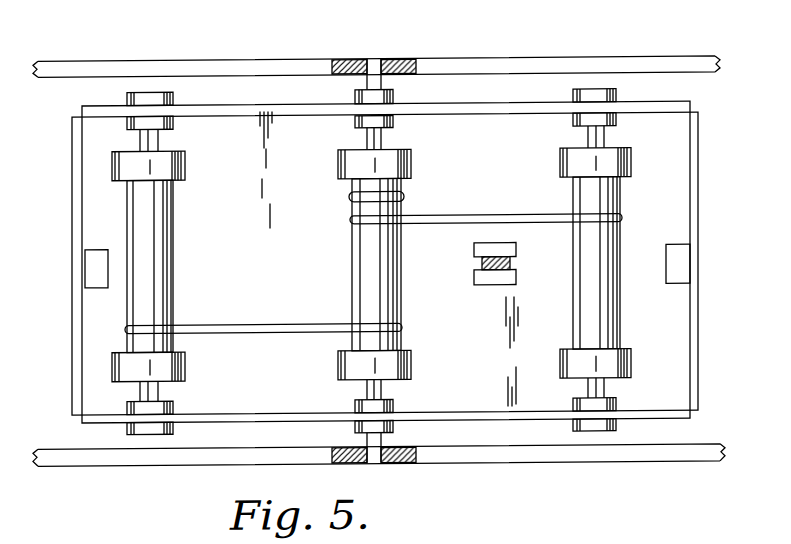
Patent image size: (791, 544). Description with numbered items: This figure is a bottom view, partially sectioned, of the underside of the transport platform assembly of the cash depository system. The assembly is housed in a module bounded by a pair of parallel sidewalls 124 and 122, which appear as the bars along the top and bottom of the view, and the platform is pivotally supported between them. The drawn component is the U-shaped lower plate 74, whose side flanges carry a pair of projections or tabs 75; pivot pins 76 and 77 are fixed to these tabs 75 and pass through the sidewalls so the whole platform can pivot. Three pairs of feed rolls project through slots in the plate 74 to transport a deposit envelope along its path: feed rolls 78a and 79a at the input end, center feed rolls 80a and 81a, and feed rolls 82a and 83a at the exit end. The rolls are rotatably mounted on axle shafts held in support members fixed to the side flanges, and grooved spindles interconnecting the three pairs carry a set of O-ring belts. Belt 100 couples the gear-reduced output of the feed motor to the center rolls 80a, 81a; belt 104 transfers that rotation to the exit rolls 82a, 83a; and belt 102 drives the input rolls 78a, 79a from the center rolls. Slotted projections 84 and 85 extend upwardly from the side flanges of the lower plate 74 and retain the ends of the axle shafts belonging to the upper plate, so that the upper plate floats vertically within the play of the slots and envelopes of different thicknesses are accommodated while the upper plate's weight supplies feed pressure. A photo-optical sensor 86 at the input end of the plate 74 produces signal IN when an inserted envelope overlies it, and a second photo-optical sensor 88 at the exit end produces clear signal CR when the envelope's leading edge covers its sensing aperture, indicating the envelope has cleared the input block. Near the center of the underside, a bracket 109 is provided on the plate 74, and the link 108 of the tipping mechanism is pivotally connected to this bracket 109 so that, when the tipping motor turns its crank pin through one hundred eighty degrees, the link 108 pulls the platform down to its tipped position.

The sidewall 122 is at (521, 59).
The sidewall 124 is at (632, 467).
The lower plate 74 is at (268, 262).
The pivot pin 76 is at (372, 60).
The pivot pin 77 is at (385, 443).
The projections or tabs 75 is at (393, 99).
The slotted projection 84 is at (173, 100).
The slotted projection 85 is at (173, 431).
The feed roll 78a is at (186, 159).
The feed roll 79a is at (186, 367).
The feed roll 80a is at (411, 160).
The feed roll 81a is at (411, 369).
The feed roll 82a is at (631, 158).
The feed roll 83a is at (632, 365).
The O-ring belt 100 is at (352, 198).
The O-ring belt 102 is at (265, 326).
The O-ring belt 104 is at (455, 218).
The photo-optical sensor 86 is at (92, 250).
The photo-optical sensor 88 is at (679, 249).
The link 108 is at (512, 272).
The bracket 109 is at (494, 290).